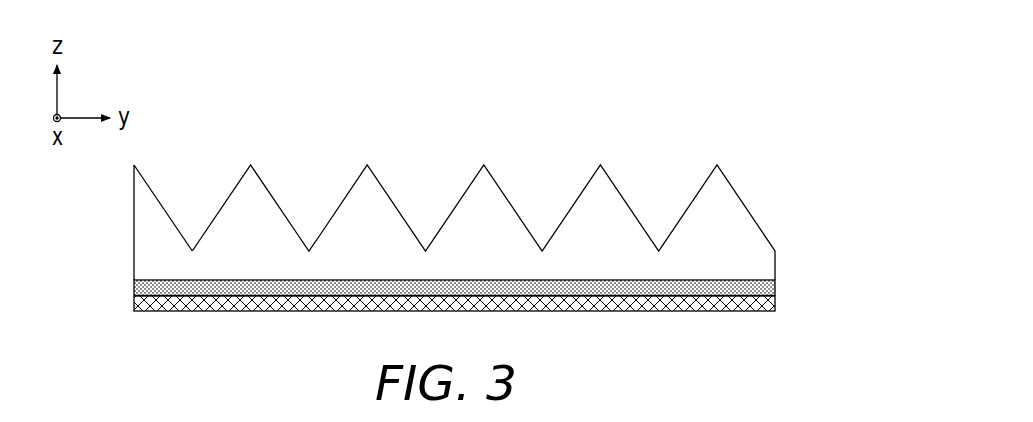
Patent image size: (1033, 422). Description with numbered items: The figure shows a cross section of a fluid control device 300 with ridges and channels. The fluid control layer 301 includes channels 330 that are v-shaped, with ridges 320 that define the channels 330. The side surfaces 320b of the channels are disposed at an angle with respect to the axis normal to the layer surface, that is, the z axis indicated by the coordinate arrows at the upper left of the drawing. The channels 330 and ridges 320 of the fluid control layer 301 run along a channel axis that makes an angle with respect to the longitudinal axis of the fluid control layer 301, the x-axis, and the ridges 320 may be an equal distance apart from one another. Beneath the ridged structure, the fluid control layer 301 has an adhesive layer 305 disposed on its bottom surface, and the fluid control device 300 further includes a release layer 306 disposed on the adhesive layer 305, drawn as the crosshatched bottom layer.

The fluid control device 300 is at (684, 127).
The fluid control layer 301 is at (134, 215).
The adhesive layer 305 is at (134, 288).
The release layer 306 is at (134, 303).
The ridges 320 is at (251, 165).
The side surfaces 320b is at (157, 198).
The channels 330 is at (305, 228).